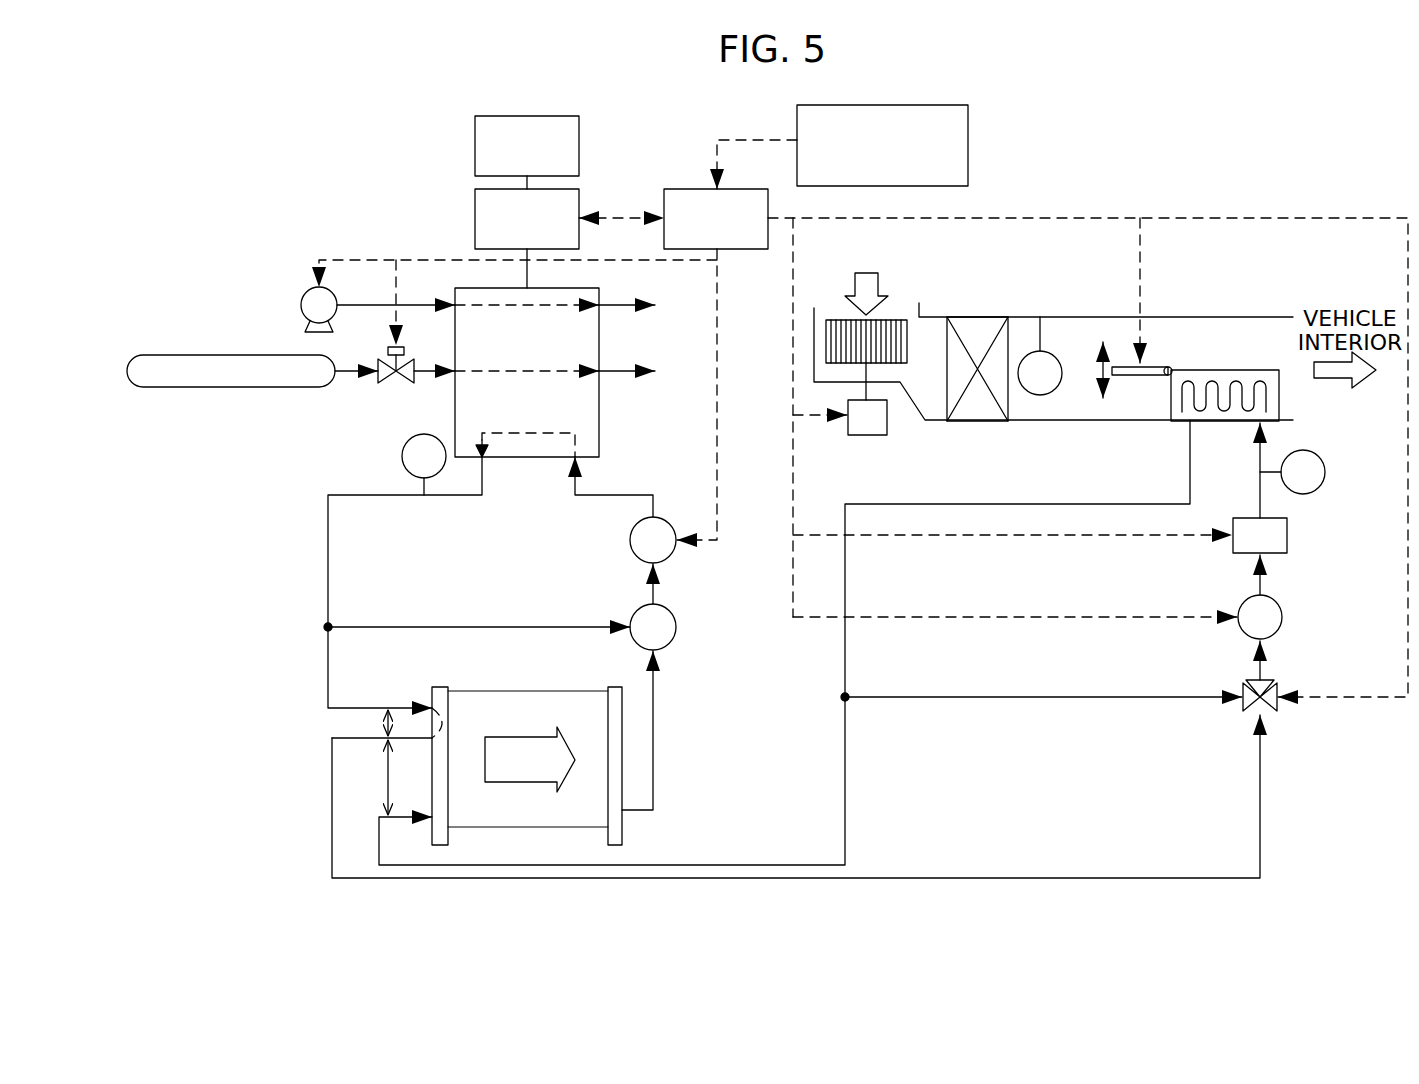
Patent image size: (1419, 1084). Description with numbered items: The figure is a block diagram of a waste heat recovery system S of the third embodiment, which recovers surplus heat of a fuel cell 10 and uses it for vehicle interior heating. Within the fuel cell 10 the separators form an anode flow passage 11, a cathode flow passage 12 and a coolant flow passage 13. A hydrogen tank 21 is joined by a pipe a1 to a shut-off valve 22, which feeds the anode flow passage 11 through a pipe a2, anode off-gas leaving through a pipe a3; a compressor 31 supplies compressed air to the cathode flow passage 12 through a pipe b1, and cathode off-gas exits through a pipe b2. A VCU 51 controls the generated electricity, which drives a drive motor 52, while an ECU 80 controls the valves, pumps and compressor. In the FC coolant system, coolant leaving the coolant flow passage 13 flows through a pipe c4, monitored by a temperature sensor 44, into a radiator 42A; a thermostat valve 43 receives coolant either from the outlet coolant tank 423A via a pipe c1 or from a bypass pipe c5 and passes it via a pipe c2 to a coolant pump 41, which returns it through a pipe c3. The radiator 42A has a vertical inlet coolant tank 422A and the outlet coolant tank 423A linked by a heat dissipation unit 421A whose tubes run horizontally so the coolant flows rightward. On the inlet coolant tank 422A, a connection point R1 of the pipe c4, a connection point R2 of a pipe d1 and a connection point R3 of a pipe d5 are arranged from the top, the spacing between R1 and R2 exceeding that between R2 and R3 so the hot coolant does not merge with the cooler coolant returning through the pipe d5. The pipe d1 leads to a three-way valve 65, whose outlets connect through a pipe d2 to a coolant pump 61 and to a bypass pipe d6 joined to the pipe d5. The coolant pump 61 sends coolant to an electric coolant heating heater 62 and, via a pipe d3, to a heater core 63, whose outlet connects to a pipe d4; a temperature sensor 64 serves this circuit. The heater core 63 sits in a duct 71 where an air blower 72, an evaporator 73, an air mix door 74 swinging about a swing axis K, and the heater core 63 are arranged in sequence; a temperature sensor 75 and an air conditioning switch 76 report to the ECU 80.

The fuel cell 10 is at (599, 420).
The anode flow passage 11 is at (490, 374).
The cathode flow passage 12 is at (490, 308).
The coolant flow passage 13 is at (545, 430).
The hydrogen tank 21 is at (229, 354).
The shut-off valve 22 is at (397, 384).
The compressor 31 is at (306, 291).
The coolant pump 41 is at (630, 540).
The radiator 42A is at (569, 753).
The heat dissipation unit 421A is at (528, 690).
The inlet coolant tank 422A is at (440, 686).
The outlet coolant tank 423A is at (615, 686).
The thermostat valve 43 is at (632, 616).
The temperature sensor 44 is at (402, 456).
The voltage control unit 51 is at (579, 208).
The drive motor 52 is at (579, 137).
The coolant pump 61 is at (1282, 617).
The coolant heating heater 62 is at (1287, 535).
The heater core 63 is at (1238, 370).
The temperature sensor 64 is at (1325, 472).
The three-way valve 65 is at (1270, 690).
The duct 71 is at (1215, 317).
The air blower 72 is at (838, 320).
The evaporator 73 is at (973, 421).
The air mix door 74 is at (1154, 358).
The temperature sensor 75 is at (1060, 380).
The air conditioning switch 76 is at (968, 148).
The electric control unit 80 is at (677, 189).
The waste heat recovery system S is at (1164, 152).
The swing axis K is at (1170, 376).
The pipe a1 is at (350, 362).
The pipe a2 is at (430, 362).
The pipe a3 is at (622, 362).
The pipe b1 is at (418, 296).
The pipe b2 is at (622, 296).
The pipe c1 is at (653, 724).
The pipe c2 is at (653, 595).
The pipe c3 is at (622, 495).
The pipe c4 is at (328, 648).
The bypass pipe c5 is at (522, 627).
The pipe d1 is at (1260, 765).
The pipe d2 is at (1260, 672).
The pipe d3 is at (1260, 583).
The pipe d4 is at (1260, 490).
The pipe d5 is at (1050, 504).
The bypass pipe d6 is at (1020, 697).
The connection point R1 is at (432, 700).
The connection point R2 is at (434, 744).
The connection point R3 is at (432, 822).